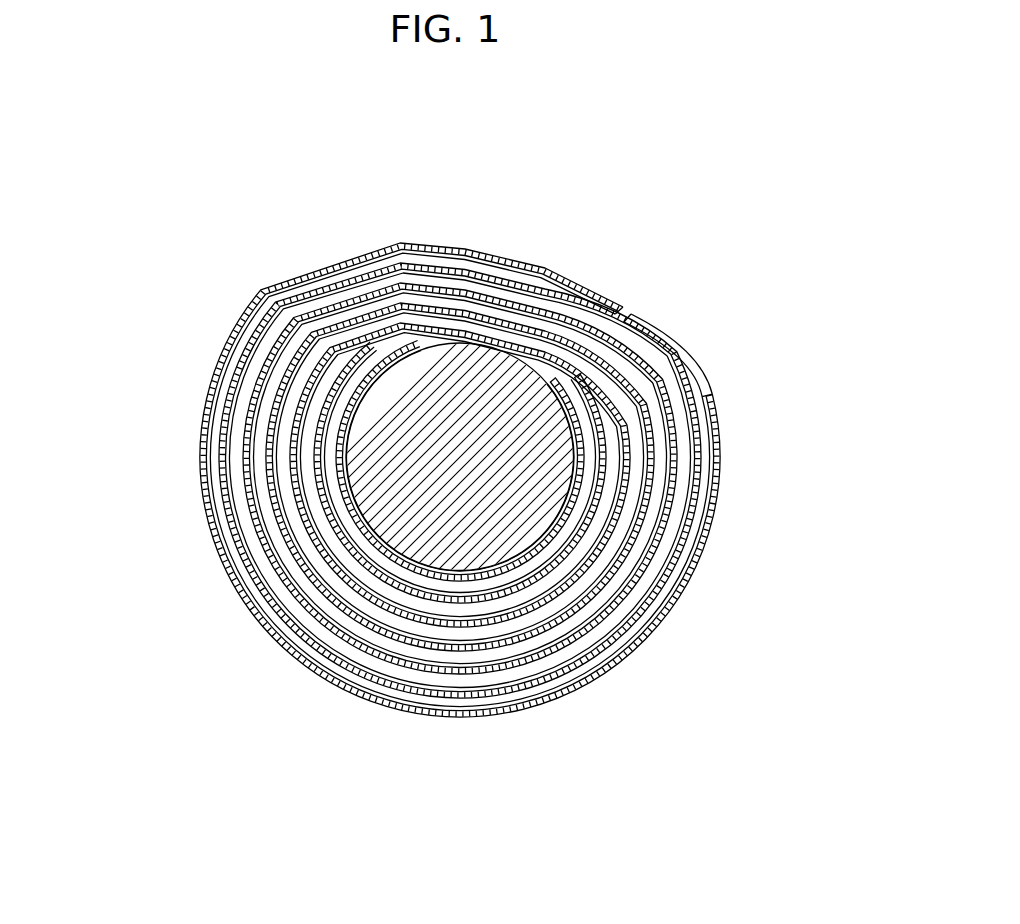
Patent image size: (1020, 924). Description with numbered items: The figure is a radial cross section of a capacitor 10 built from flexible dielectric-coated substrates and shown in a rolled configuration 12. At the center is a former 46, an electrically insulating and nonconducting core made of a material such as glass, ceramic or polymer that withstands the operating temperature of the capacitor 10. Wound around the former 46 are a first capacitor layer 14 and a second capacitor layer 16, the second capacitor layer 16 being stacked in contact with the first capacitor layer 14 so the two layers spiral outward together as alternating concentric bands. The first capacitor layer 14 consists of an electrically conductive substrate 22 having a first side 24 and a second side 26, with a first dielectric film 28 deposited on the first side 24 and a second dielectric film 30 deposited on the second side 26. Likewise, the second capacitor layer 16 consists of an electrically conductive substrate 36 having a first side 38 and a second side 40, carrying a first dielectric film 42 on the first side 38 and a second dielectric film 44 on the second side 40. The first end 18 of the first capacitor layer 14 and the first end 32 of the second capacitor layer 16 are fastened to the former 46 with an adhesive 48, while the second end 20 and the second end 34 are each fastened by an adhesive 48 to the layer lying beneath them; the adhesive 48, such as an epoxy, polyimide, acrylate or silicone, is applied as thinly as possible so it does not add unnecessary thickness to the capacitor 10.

The capacitor 10 is at (188, 318).
The rolled configuration 12 is at (186, 450).
The first capacitor layer 14 is at (335, 578).
The second capacitor layer 16 is at (330, 545).
The first end 18 is at (408, 352).
The second end 20 is at (646, 312).
The electrically conductive substrate 22 is at (340, 495).
The first side 24 is at (372, 575).
The second side 26 is at (440, 590).
The first dielectric film 28 is at (577, 430).
The second dielectric film 30 is at (607, 470).
The first end 32 is at (340, 345).
The second end 34 is at (712, 410).
The electrically conductive substrate 36 is at (300, 445).
The first side 38 is at (482, 625).
The second side 40 is at (510, 535).
The first dielectric film 42 is at (605, 498).
The second dielectric film 44 is at (600, 535).
The former 46 is at (603, 545).
The adhesive 48 is at (348, 350).